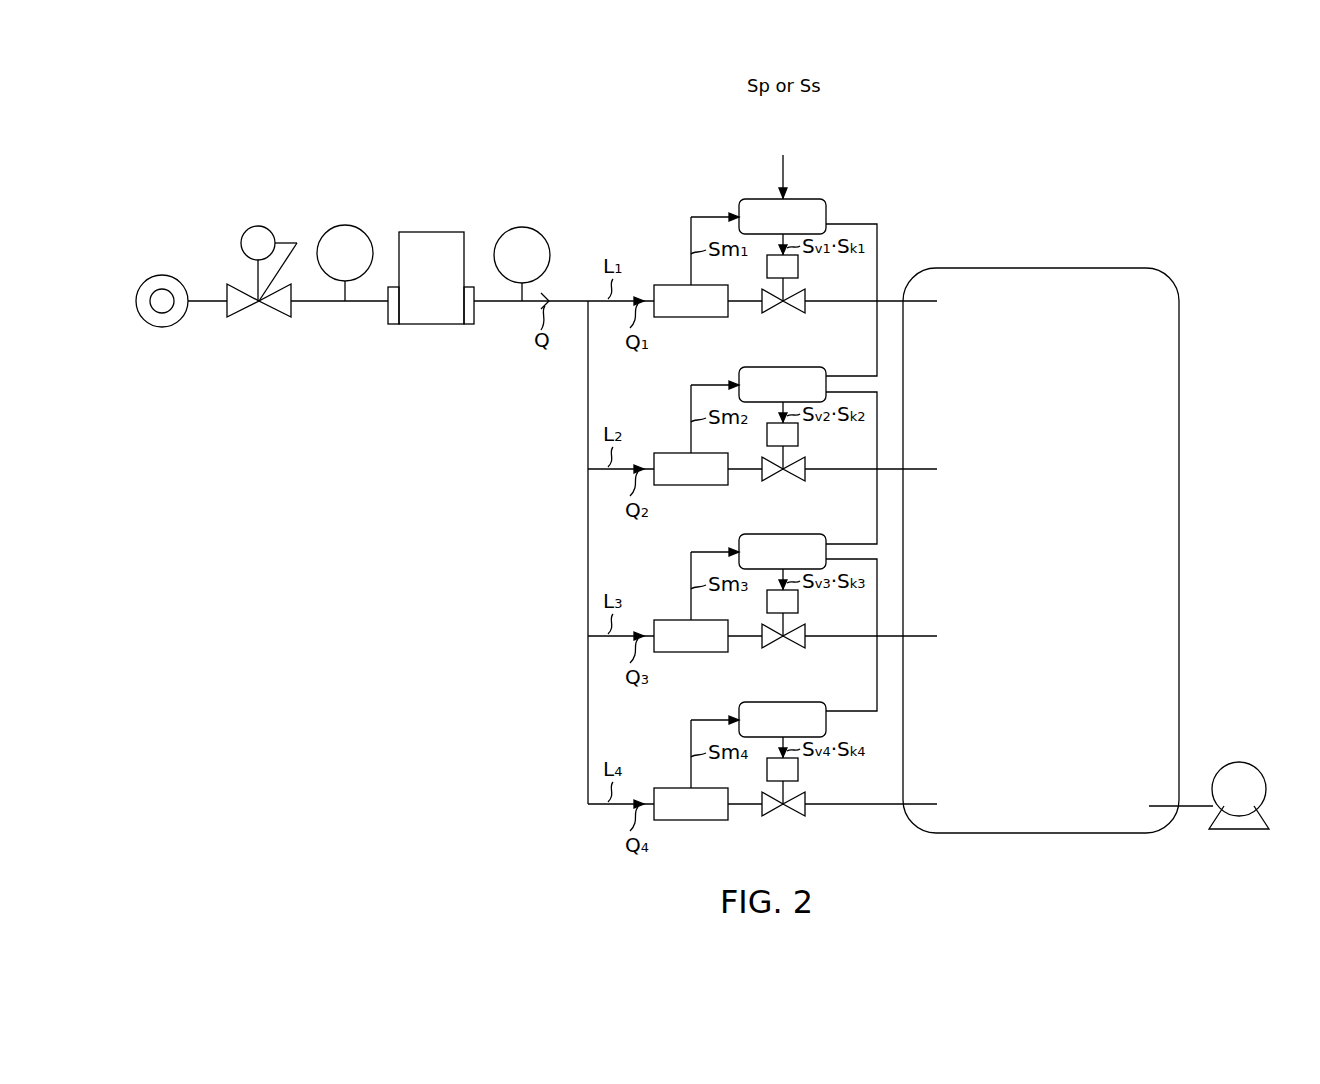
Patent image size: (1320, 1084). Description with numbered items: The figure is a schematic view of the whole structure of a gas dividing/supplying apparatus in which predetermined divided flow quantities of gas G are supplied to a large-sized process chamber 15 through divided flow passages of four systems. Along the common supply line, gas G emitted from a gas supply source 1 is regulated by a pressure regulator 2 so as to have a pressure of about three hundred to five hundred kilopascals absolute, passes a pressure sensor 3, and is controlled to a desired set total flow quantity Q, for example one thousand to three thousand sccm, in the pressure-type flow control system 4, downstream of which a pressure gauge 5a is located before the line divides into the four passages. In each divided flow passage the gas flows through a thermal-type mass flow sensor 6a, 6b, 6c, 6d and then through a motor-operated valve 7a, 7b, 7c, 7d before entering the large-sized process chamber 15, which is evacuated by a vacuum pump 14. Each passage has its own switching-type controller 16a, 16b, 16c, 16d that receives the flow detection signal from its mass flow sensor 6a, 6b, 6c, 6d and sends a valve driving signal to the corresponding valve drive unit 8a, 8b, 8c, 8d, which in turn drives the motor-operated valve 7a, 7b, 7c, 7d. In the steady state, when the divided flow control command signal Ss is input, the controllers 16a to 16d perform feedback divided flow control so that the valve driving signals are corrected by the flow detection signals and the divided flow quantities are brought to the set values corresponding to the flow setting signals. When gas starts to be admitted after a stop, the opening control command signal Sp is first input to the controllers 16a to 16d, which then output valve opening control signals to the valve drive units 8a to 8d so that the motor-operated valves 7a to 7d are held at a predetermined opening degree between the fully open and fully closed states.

The gas supply source 1 is at (162, 262).
The pressure regulator 2 is at (259, 226).
The pressure sensor 3 is at (346, 225).
The pressure-type flow control system 4 is at (432, 232).
The pressure gauge 5a is at (523, 227).
The thermal-type mass flow sensor 6a is at (691, 318).
The thermal-type mass flow sensor 6b is at (691, 486).
The thermal-type mass flow sensor 6c is at (691, 653).
The thermal-type mass flow sensor 6d is at (691, 821).
The motor-operated valve 7a is at (781, 313).
The motor-operated valve 7b is at (781, 481).
The motor-operated valve 7c is at (781, 648).
The motor-operated valve 7d is at (781, 816).
The valve drive unit 8a is at (799, 268).
The valve drive unit 8b is at (799, 436).
The valve drive unit 8c is at (799, 603).
The valve drive unit 8d is at (799, 771).
The vacuum pump 14 is at (1241, 762).
The large-sized process chamber 15 is at (1030, 268).
The switching-type controller 16a is at (808, 199).
The switching-type controller 16b is at (808, 367).
The switching-type controller 16c is at (808, 534).
The switching-type controller 16d is at (808, 702).